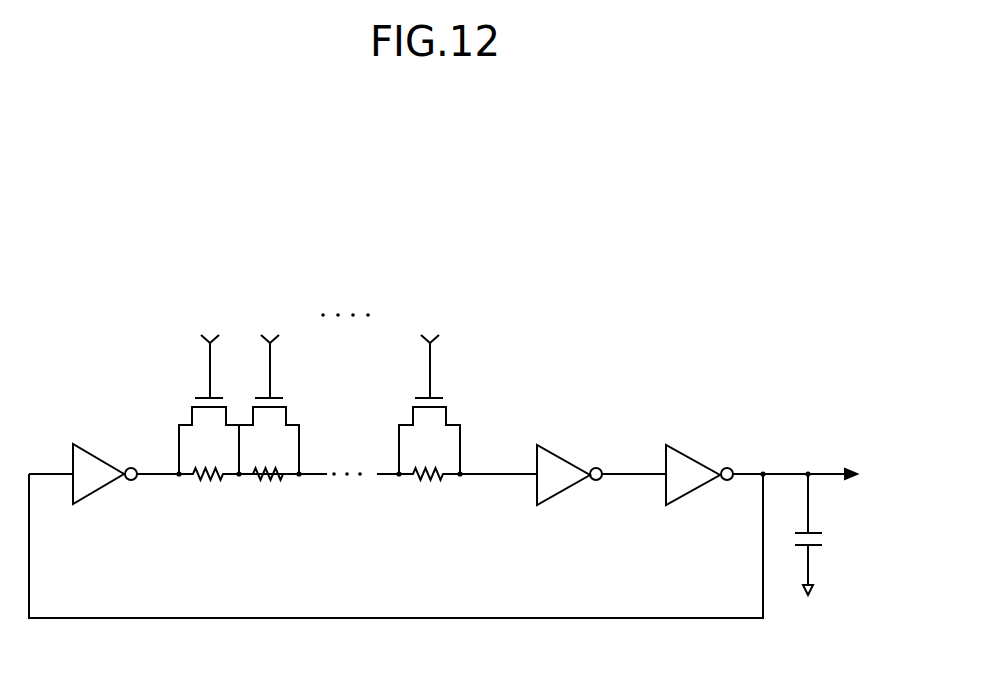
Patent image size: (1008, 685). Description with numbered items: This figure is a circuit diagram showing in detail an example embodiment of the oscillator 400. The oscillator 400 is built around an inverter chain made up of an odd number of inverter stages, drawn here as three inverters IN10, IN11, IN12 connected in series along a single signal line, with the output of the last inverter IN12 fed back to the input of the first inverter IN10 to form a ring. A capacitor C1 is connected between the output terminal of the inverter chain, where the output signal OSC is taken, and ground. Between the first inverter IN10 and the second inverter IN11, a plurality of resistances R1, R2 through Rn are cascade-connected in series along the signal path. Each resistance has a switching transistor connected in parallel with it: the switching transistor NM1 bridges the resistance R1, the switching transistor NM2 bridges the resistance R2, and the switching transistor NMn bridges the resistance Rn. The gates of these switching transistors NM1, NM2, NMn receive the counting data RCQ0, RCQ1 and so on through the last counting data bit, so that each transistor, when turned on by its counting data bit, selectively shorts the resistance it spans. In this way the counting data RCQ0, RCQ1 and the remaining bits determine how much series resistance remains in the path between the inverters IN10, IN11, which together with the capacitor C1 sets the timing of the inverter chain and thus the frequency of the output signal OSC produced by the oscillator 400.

The oscillator 400 is at (123, 230).
The inverter stage IN10 is at (110, 485).
The inverter stage IN11 is at (575, 483).
The inverter stage IN12 is at (703, 462).
The switching transistor NM1 is at (209, 404).
The switching transistor NM2 is at (269, 404).
The switching transistor NMn is at (429, 404).
The resistance R1 is at (209, 491).
The resistance R2 is at (269, 491).
The resistance Rn is at (429, 491).
The capacitor C1 is at (824, 534).
The counting data RCQ0 is at (211, 323).
The counting data RCQ1 is at (272, 316).
The oscillation signal output OSC is at (884, 477).